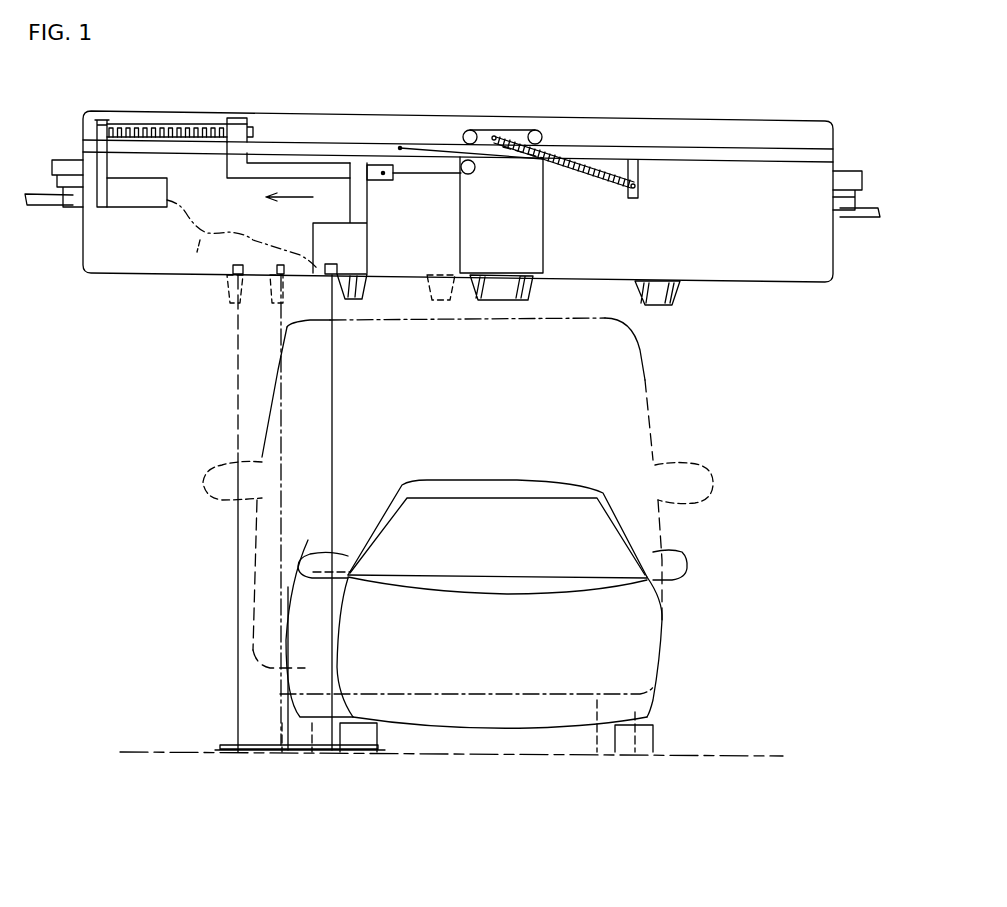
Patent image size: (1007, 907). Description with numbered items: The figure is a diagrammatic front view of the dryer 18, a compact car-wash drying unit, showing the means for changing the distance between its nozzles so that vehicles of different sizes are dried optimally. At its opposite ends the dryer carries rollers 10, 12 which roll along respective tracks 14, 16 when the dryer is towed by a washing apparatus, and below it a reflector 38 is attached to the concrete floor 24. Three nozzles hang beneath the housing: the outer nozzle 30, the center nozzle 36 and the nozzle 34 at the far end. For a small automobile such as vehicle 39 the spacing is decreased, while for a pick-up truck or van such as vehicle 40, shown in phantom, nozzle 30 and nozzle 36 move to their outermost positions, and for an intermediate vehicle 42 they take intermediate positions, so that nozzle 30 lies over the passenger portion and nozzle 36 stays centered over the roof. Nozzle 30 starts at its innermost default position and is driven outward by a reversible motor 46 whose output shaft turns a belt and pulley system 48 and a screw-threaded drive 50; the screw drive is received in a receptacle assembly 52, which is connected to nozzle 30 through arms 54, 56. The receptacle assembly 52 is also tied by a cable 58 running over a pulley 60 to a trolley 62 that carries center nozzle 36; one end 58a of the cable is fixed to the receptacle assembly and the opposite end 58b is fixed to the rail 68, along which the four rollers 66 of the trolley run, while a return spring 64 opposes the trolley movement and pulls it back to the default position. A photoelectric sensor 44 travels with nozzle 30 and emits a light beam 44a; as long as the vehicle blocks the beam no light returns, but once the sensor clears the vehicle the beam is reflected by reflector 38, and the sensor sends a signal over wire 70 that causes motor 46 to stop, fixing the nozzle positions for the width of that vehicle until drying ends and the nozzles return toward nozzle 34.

The roller 10 is at (68, 173).
The roller 12 is at (842, 187).
The track 14 is at (82, 203).
The track 16 is at (850, 203).
The dryer 18 is at (138, 281).
The concrete floor 24 is at (755, 758).
The nozzle 30 is at (357, 285).
The nozzle 34 is at (687, 302).
The center nozzle 36 is at (530, 285).
The reflector 38 is at (247, 752).
The vehicle 39 is at (580, 644).
The vehicle 40 is at (645, 395).
The vehicle 42 is at (295, 628).
The photoelectric sensor 44 is at (233, 273).
The light beam 44a is at (238, 415).
The reversible motor 46 is at (148, 200).
The belt and pulley system 48 is at (107, 168).
The screw-threaded drive 50 is at (143, 126).
The receptacle assembly 52 is at (238, 118).
The arm 54 is at (257, 175).
The arm 56 is at (362, 200).
The cable 58 is at (418, 176).
The cable end 58a is at (382, 172).
The cable end 58b is at (400, 147).
The pulley 60 is at (477, 164).
The trolley 62 is at (537, 233).
The return spring 64 is at (610, 190).
The rollers 66 is at (535, 131).
The rail 68 is at (593, 152).
The wire 70 is at (207, 233).